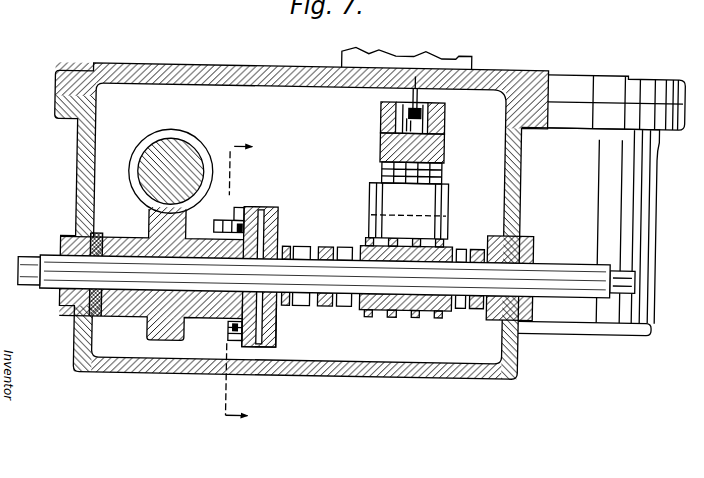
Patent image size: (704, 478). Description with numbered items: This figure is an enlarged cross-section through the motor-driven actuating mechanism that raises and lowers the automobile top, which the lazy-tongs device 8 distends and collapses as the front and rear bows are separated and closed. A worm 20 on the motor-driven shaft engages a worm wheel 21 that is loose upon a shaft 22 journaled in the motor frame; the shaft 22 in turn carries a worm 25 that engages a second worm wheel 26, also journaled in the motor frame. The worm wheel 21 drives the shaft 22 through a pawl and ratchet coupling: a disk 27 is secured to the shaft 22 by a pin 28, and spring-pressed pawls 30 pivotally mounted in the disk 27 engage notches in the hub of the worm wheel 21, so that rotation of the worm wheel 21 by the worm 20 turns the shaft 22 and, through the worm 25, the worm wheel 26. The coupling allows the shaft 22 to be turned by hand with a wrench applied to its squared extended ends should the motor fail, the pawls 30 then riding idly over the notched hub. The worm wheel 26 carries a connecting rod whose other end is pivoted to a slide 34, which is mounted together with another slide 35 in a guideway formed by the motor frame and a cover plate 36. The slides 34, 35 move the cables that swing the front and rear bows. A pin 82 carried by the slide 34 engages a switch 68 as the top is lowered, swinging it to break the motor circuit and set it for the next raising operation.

The lazy-tongs device 8 is at (232, 284).
The worm 20 is at (130, 161).
The worm wheel 21 is at (148, 218).
The shaft 22 is at (584, 261).
The worm 25 is at (455, 248).
The worm wheel 26 is at (345, 247).
The disk 27 is at (280, 336).
The pin 28 is at (290, 214).
The spring pressed pawls 30 is at (238, 206).
The slide 34 is at (446, 153).
The slide 35 is at (458, 111).
The cover plate 36 is at (294, 64).
The switch 68 is at (410, 83).
The pin 82 is at (404, 120).